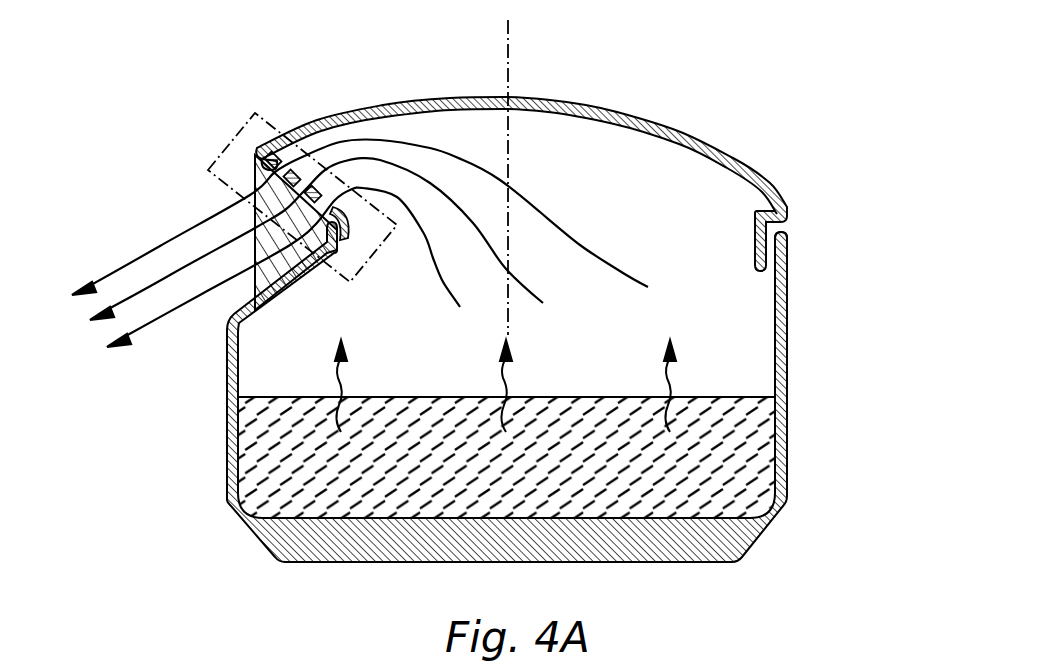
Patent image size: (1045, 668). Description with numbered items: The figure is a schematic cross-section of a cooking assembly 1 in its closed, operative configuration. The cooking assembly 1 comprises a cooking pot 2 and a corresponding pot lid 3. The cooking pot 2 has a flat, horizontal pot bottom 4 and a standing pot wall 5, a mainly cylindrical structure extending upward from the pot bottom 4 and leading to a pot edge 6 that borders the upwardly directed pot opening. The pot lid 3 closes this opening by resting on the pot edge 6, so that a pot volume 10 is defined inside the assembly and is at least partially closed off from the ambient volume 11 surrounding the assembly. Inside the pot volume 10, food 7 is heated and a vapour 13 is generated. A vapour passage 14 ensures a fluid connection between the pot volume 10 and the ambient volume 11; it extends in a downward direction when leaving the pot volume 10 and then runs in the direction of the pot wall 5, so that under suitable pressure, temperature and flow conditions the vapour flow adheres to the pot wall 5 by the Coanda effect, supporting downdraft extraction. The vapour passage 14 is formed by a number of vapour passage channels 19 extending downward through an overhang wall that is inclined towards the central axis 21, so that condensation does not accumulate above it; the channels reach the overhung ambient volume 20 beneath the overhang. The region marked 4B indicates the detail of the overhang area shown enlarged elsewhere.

The cooking assembly 1 is at (104, 113).
The cooking pot 2 is at (509, 423).
The pot lid 3 is at (738, 146).
The pot bottom 4 is at (641, 535).
The detail region of FIG. 4B is at (233, 140).
The pot wall 5 is at (787, 322).
The pot edge 6 is at (787, 237).
The food 7 is at (582, 471).
The pot volume 10 is at (645, 205).
The ambient volume 11 is at (672, 77).
The vapour 13 is at (344, 380).
The vapour passage 14 is at (142, 265).
The vapour passage channels 19 is at (342, 168).
The overhung ambient volume 20 is at (255, 243).
The central axis 21 is at (512, 40).